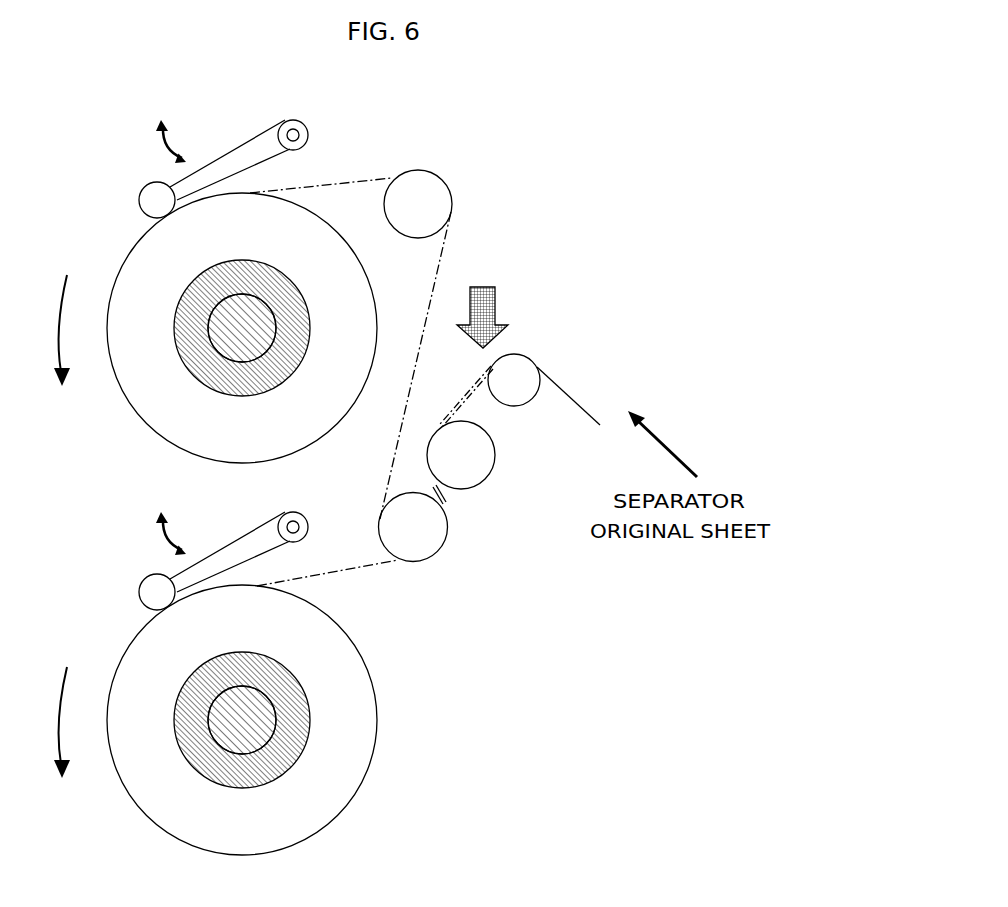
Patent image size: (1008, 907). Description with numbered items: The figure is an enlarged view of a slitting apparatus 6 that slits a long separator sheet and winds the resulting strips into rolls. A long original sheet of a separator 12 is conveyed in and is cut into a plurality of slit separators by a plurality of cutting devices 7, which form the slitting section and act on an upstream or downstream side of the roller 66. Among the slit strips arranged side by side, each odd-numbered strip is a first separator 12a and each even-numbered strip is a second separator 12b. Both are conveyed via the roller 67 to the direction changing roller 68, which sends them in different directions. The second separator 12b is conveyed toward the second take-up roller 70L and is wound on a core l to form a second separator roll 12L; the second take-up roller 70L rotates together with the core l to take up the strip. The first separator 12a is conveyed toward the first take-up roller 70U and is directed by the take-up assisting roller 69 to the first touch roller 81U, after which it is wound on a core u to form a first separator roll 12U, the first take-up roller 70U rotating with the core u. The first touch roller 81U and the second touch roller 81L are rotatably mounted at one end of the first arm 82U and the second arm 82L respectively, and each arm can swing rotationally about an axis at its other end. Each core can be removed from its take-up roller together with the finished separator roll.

The slitting apparatus 6 is at (634, 117).
The cutting devices 7 is at (493, 297).
The original sheet of a separator 12 is at (568, 391).
The first separator 12a is at (356, 179).
The second separator 12b is at (321, 571).
The first separator roll 12U is at (147, 262).
The second separator roll 12L is at (215, 720).
The roller 66 is at (517, 392).
The roller 67 is at (477, 478).
The direction changing roller 68 is at (432, 548).
The take-up assisting roller 69 is at (440, 188).
The first take-up roller 70U is at (213, 350).
The second take-up roller 70L is at (203, 755).
The first touch roller 81U is at (150, 192).
The second touch roller 81L is at (143, 573).
The first arm 82U is at (238, 151).
The second arm 82L is at (232, 544).
The core u is at (190, 338).
The core l is at (183, 748).